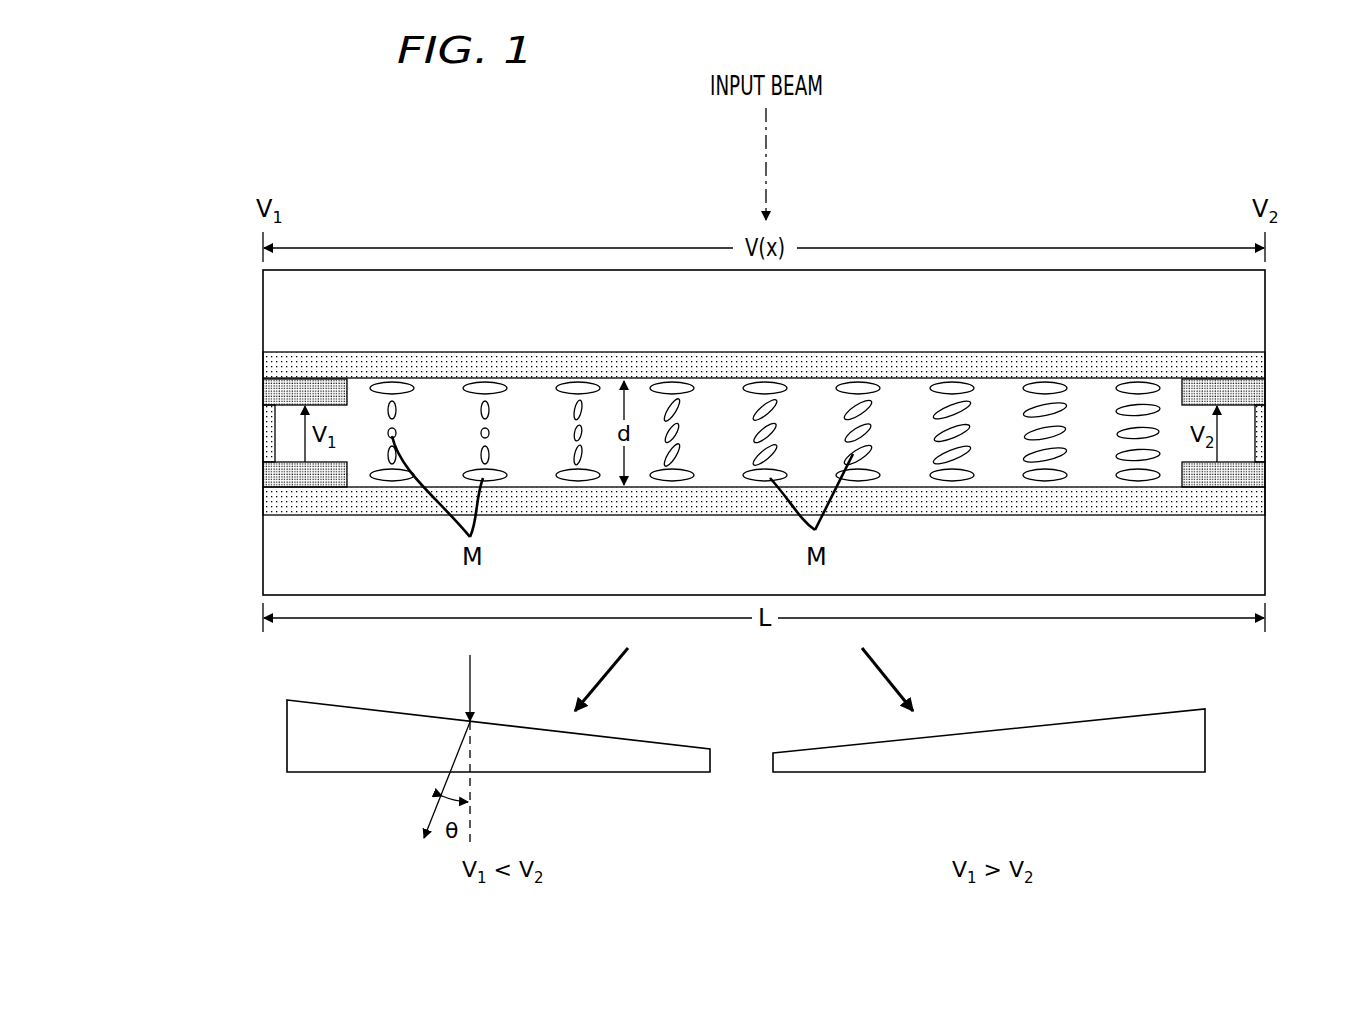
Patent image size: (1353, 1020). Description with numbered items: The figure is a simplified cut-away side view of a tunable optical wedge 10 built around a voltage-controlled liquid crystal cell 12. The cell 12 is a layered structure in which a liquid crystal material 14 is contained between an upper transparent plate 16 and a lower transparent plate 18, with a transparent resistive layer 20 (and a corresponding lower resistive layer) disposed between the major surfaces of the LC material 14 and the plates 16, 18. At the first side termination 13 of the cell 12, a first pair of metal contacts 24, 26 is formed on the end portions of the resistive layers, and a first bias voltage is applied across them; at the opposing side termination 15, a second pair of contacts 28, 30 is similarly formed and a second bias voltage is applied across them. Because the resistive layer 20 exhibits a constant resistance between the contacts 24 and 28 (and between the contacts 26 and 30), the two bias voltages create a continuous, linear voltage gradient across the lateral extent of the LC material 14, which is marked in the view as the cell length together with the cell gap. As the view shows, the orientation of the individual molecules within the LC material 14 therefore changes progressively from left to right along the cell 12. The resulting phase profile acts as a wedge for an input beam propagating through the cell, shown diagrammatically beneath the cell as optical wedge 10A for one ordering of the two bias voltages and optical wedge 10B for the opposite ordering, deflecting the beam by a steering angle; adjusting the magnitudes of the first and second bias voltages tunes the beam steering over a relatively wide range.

The tunable optical wedge 10 is at (745, 792).
The optical wedge 10A is at (318, 773).
The optical wedge 10B is at (1172, 773).
The voltage-controlled liquid crystal cell 12 is at (200, 200).
The first side termination 13 is at (258, 428).
The liquid crystal material 14 is at (897, 408).
The opposing side termination 15 is at (1267, 432).
The upper transparent plate 16 is at (1265, 306).
The lower transparent plate 18 is at (1265, 556).
The resistive layer 20 is at (1265, 364).
The first contact 24 is at (263, 387).
The first contact 26 is at (263, 473).
The second contact 28 is at (1265, 394).
The second contact 30 is at (1265, 474).